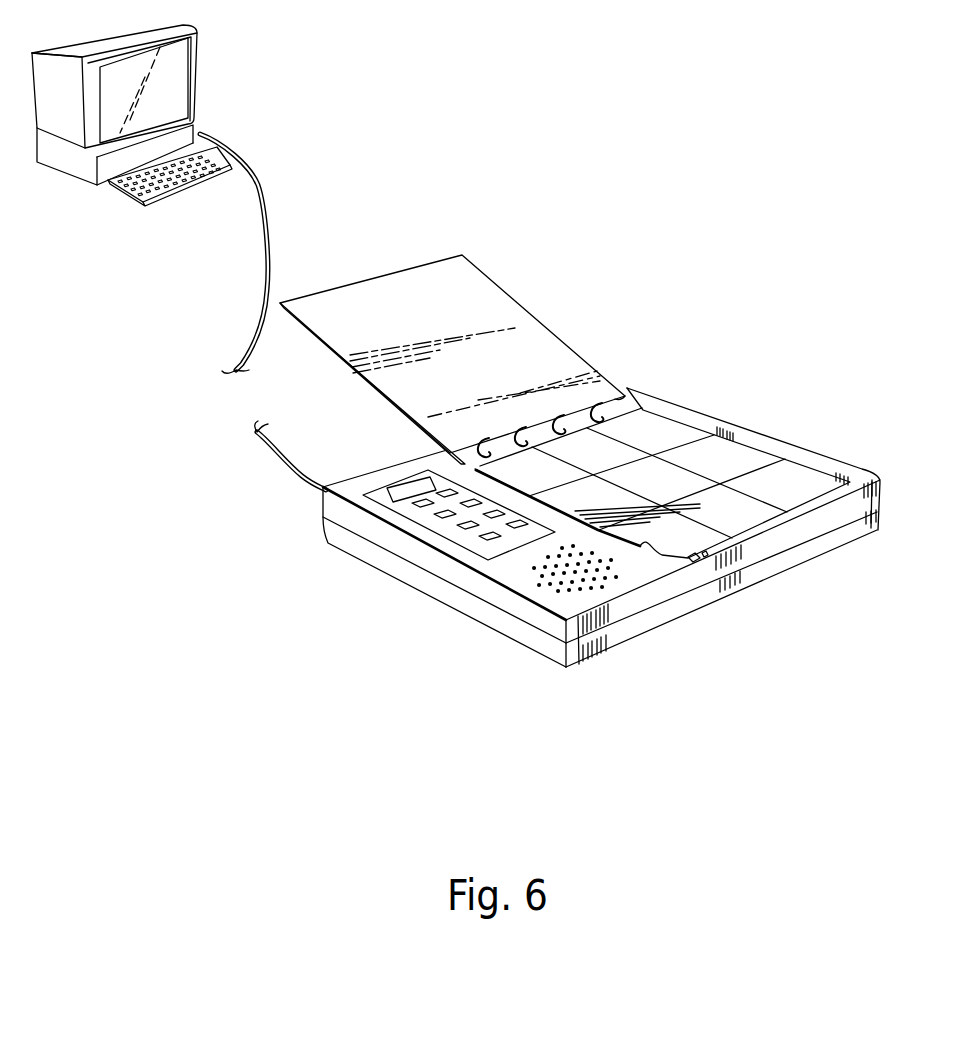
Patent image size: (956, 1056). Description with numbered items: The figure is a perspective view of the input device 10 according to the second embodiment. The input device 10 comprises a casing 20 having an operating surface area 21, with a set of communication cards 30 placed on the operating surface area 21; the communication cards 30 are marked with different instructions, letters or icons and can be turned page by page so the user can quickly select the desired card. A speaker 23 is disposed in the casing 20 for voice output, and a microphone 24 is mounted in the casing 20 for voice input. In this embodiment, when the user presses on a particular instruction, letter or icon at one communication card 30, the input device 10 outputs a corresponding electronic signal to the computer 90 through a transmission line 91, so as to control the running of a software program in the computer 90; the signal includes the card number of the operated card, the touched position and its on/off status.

The input device 10 is at (352, 591).
The casing 20 is at (470, 583).
The operating surface area 21 is at (764, 456).
The speaker 23 is at (552, 582).
The microphone 24 is at (692, 562).
The communication cards 30 is at (483, 290).
The computer 90 is at (185, 68).
The transmission line 91 is at (260, 202).